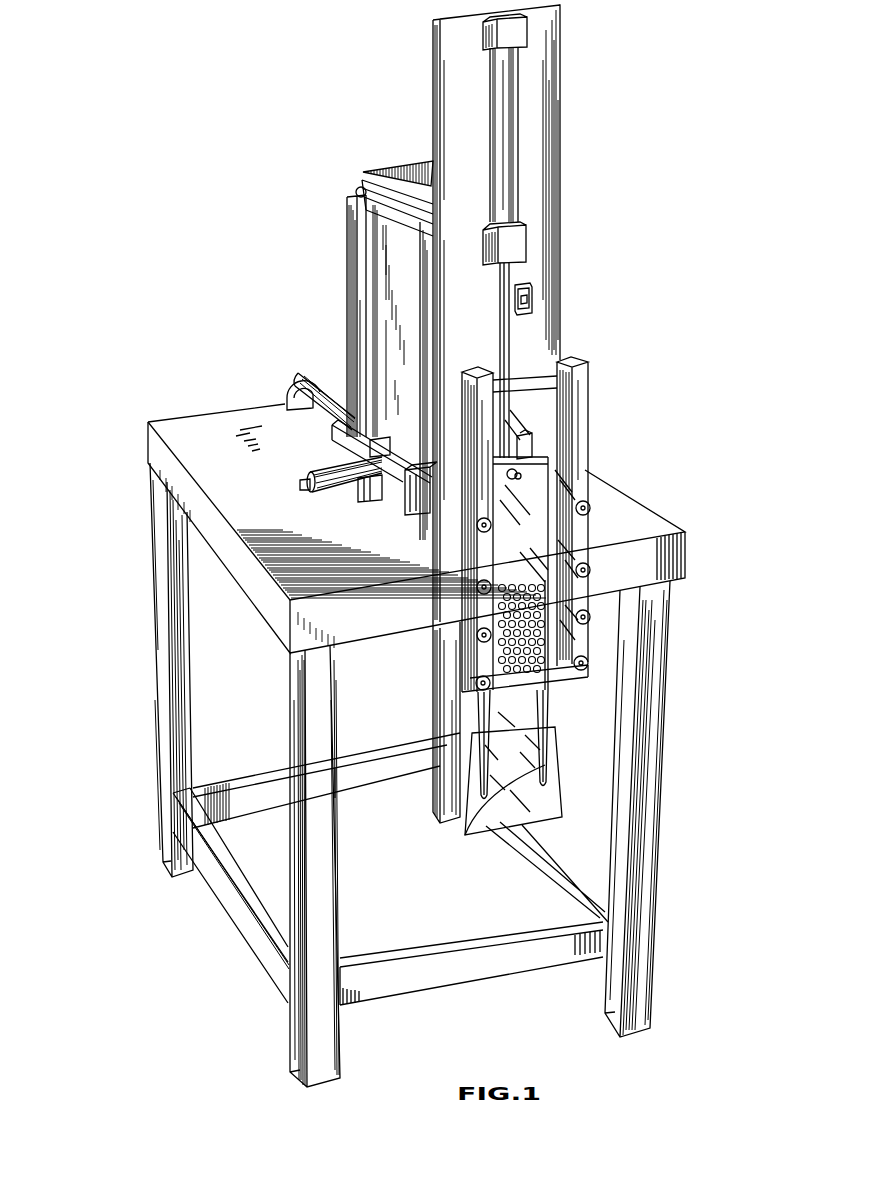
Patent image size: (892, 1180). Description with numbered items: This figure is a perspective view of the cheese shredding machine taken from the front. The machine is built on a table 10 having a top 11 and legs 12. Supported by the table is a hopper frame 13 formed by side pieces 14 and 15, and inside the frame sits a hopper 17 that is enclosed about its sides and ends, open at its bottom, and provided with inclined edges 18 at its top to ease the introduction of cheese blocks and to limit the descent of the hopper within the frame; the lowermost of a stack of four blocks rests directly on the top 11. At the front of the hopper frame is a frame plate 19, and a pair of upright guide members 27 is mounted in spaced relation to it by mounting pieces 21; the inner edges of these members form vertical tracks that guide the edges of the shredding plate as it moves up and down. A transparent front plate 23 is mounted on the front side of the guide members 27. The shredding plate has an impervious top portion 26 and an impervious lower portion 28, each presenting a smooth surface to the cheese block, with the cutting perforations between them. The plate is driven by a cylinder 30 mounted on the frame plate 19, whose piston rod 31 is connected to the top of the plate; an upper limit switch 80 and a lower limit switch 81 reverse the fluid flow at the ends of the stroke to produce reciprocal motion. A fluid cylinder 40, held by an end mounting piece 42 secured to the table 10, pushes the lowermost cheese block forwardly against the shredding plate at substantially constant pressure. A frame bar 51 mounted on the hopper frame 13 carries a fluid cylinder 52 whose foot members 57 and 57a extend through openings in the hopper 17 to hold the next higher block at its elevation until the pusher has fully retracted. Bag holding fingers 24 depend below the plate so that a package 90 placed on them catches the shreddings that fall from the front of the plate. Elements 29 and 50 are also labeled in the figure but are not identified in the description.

The table 10 is at (403, 745).
The top 11 is at (416, 528).
The legs 12 is at (150, 631).
The hopper frame 13 is at (347, 315).
The side piece 14 is at (347, 283).
The side piece 15 is at (420, 308).
The hopper 17 is at (392, 158).
The inclined edges 18 is at (372, 178).
The frame plate 19 is at (562, 128).
The mounting pieces 21 is at (452, 445).
The front plate 23 is at (522, 518).
The bag holding fingers 24 is at (526, 789).
The top portion 26 is at (535, 550).
The upright guide members 27 is at (620, 342).
The lower portion 28 is at (513, 744).
The carriage bottom bar 29 is at (460, 660).
The cylinder 30 is at (518, 64).
The piston rod 31 is at (512, 332).
The fluid cylinder 40 is at (330, 385).
The end mounting piece 42 is at (265, 379).
The cylinder end 50 is at (330, 495).
The frame bar 51 is at (410, 507).
The fluid cylinder 52 is at (329, 488).
The foot member 57 is at (368, 502).
The foot member 57a is at (300, 397).
The upper limit switch 80 is at (536, 297).
The lower limit switch 81 is at (535, 445).
The package 90 is at (559, 792).